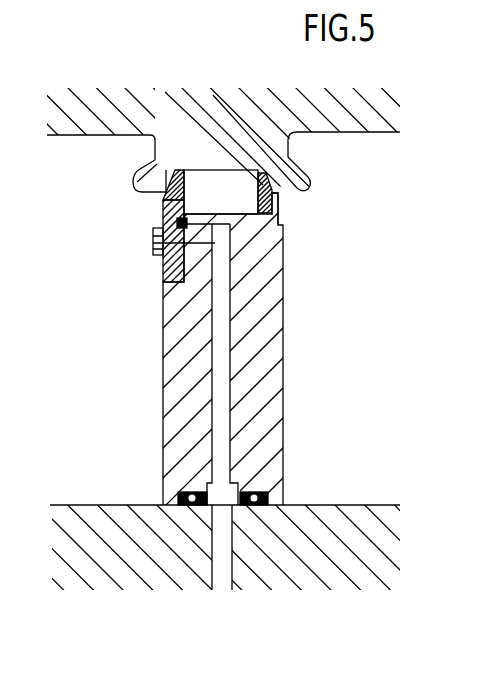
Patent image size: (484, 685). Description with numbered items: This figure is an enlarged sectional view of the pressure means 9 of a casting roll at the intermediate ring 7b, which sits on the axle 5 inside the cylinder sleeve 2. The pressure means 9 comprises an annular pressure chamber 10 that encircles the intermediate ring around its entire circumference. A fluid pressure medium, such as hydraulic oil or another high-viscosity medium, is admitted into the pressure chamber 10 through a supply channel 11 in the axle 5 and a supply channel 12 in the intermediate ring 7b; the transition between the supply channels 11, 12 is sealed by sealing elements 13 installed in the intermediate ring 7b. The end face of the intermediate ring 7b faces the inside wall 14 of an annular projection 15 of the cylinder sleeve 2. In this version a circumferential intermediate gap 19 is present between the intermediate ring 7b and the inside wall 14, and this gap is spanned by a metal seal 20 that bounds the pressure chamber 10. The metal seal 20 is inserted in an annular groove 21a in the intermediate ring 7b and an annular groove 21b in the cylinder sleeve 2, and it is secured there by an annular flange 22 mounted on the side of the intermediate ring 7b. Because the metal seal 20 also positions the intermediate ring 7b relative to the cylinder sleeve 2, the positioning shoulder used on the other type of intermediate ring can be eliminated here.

The cylinder sleeve 2 is at (242, 122).
The axle 5 is at (140, 560).
The intermediate ring 7b is at (242, 350).
The pressure means 9 is at (300, 252).
The pressure chamber 10 is at (279, 216).
The supply channel 11 is at (228, 550).
The supply channel 12 is at (220, 350).
The sealing elements 13 is at (267, 497).
The inside wall 14 is at (140, 168).
The annular projection 15 is at (274, 190).
The circumferential intermediate gap 19 is at (236, 183).
The metal seal 20 is at (205, 131).
The annular groove 21a is at (162, 217).
The annular groove 21b is at (180, 170).
The annular flange 22 is at (163, 268).